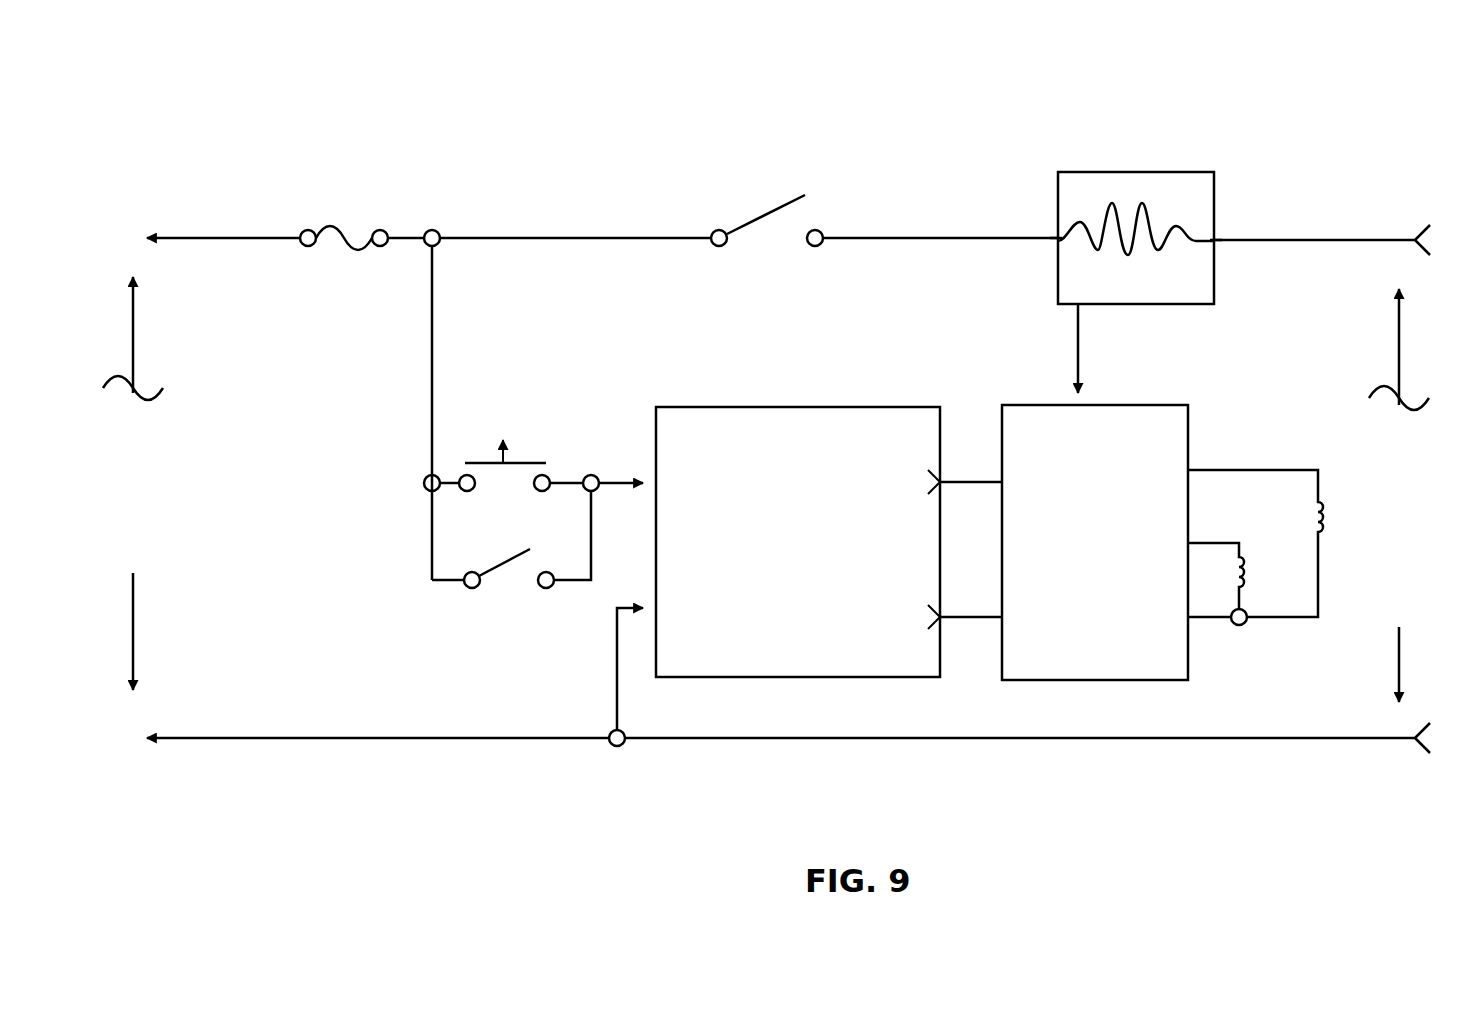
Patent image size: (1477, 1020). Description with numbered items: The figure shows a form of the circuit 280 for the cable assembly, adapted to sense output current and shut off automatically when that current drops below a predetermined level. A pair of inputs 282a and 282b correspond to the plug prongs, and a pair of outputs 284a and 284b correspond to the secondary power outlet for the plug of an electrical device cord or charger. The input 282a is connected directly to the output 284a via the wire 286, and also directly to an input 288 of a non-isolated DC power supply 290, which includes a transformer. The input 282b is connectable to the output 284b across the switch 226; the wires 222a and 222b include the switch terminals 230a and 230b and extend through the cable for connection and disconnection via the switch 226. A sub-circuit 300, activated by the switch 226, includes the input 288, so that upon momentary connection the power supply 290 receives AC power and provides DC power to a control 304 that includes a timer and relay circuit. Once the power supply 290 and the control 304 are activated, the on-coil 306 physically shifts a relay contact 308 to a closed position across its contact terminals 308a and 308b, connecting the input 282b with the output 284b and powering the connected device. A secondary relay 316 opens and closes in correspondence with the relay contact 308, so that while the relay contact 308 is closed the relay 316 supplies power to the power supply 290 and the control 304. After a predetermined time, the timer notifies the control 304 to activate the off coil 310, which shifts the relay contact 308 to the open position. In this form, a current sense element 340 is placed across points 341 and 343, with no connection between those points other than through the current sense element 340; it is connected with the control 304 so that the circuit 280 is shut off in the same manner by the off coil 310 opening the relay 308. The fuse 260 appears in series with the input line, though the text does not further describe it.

The circuit 280 is at (866, 66).
The input 282a is at (153, 773).
The input 282b is at (146, 193).
The output 284a is at (1413, 770).
The output 284b is at (1388, 164).
The fuse 260 is at (401, 199).
The relay contact 308 is at (767, 265).
The contact terminal 308a is at (708, 266).
The contact terminal 308b is at (836, 266).
The current sense element 340 is at (1141, 257).
The point 341 is at (1050, 246).
The point 343 is at (1226, 235).
The sub-circuit 300 is at (841, 390).
The control 304 is at (1123, 395).
The switch 226 is at (501, 448).
The wire 222a is at (446, 489).
The wire 222b is at (574, 490).
The switch terminal 230a is at (465, 474).
The switch terminal 230b is at (546, 475).
The secondary relay 316 is at (499, 606).
The input 288 is at (642, 672).
The non-isolated DC power supply 290 is at (867, 678).
The wire 286 is at (855, 740).
The on-coil 306 is at (1318, 510).
The off coil 310 is at (1247, 555).